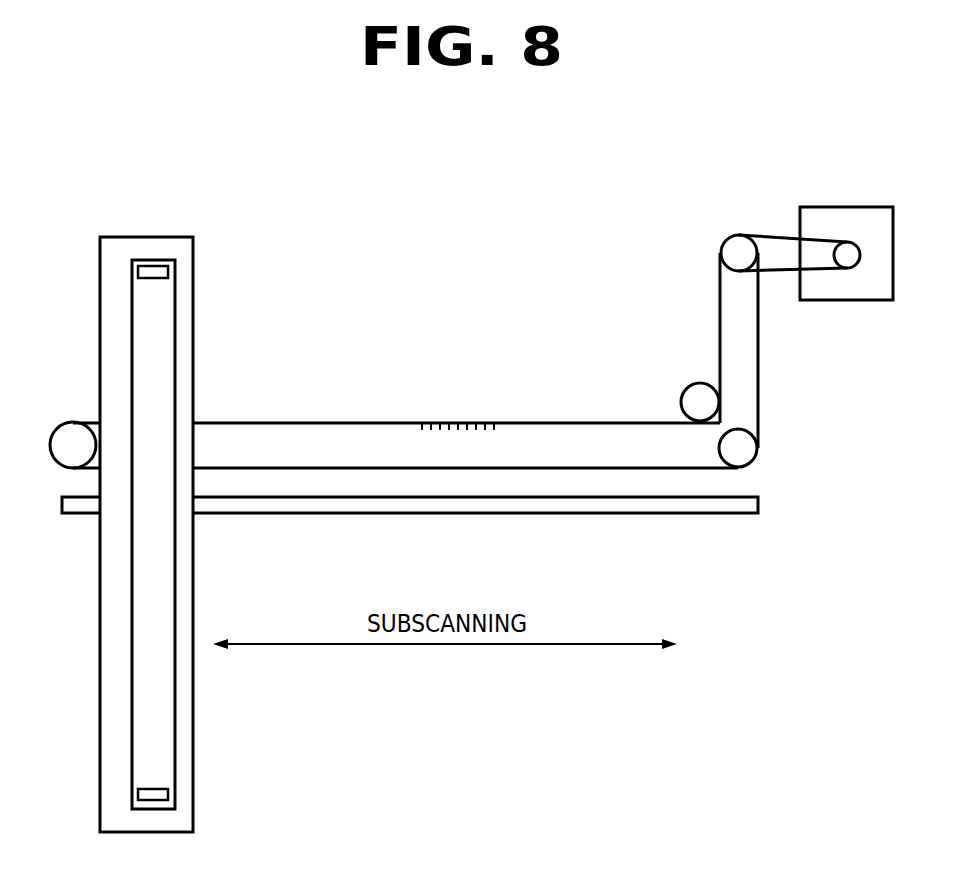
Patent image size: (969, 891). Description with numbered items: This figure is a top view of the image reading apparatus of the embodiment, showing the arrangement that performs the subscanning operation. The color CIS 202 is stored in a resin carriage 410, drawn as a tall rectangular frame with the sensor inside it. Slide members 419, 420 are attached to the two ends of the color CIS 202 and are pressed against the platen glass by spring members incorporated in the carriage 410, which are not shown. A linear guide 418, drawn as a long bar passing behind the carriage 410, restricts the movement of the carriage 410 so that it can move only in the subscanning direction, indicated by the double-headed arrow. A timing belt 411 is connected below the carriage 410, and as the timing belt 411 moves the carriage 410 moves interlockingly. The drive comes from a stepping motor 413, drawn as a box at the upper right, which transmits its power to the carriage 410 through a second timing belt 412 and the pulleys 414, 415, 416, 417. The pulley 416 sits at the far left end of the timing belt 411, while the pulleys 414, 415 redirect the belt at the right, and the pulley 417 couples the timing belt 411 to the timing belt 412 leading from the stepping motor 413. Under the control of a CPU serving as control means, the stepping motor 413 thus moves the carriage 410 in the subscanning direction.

The color CIS 202 is at (176, 768).
The carriage 410 is at (194, 716).
The timing belt 411 is at (455, 422).
The timing belt 412 is at (773, 236).
The stepping motor 413 is at (852, 289).
The pulley 414 is at (696, 396).
The pulley 415 is at (746, 457).
The pulley 416 is at (67, 436).
The pulley 417 is at (728, 251).
The linear guide 418 is at (478, 514).
The slide member 419 is at (155, 269).
The slide member 420 is at (152, 800).